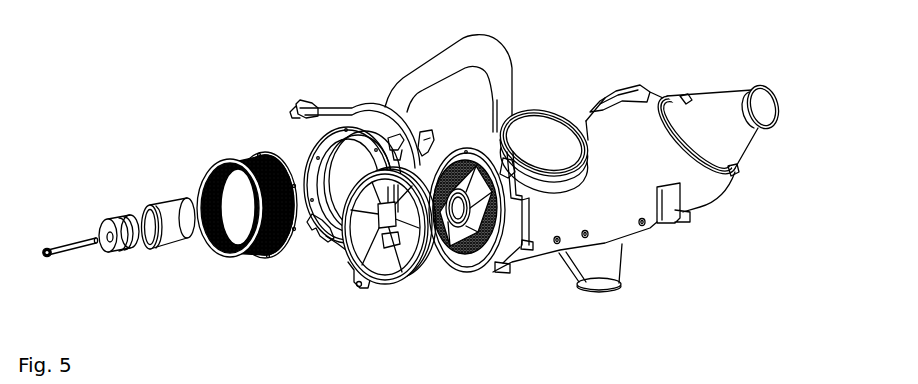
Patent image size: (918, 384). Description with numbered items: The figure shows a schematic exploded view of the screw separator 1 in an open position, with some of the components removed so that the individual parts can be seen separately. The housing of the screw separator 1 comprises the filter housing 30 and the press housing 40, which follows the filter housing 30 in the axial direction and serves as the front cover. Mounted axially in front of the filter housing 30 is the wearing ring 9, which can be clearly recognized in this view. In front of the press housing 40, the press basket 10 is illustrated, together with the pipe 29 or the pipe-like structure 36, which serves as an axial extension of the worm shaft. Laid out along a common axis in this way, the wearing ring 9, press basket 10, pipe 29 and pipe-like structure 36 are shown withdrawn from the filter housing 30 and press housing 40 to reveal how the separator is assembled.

The screw separator 1 is at (97, 52).
The wearing ring 9 is at (408, 285).
The press basket 10 is at (267, 265).
The pipe 29 is at (170, 265).
The filter housing 30 is at (566, 113).
The pipe-like structure 36 is at (142, 272).
The press housing 40 is at (373, 98).